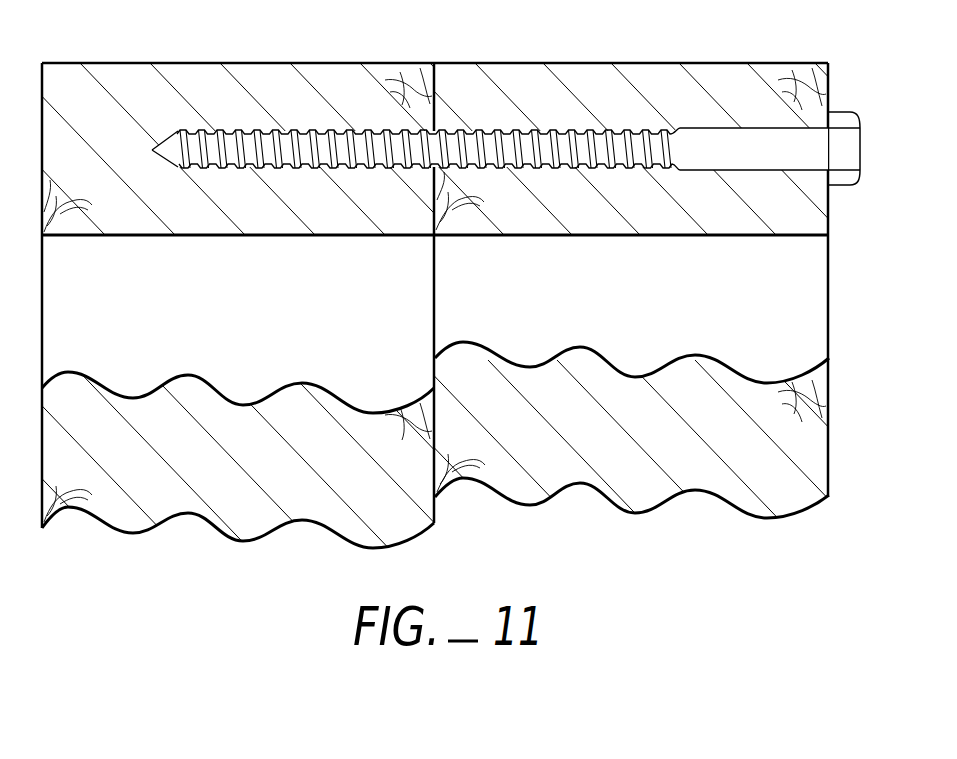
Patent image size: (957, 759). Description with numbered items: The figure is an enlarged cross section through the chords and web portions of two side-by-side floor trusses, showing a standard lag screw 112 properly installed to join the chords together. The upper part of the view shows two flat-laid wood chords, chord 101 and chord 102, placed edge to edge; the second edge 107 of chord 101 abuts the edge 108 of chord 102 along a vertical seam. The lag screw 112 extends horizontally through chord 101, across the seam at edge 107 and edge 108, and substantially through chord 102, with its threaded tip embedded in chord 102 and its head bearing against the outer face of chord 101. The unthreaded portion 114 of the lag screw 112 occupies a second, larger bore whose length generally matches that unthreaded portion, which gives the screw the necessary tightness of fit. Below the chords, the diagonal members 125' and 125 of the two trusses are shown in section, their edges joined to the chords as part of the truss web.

The chord 101 is at (663, 63).
The chord 102 is at (247, 63).
The second edge 107 is at (433, 108).
The edge 108 is at (440, 183).
The lag screw 112 is at (506, 95).
The unthreaded portion 114 is at (727, 128).
The diagonal member 125 is at (653, 397).
The diagonal member 125' is at (305, 397).